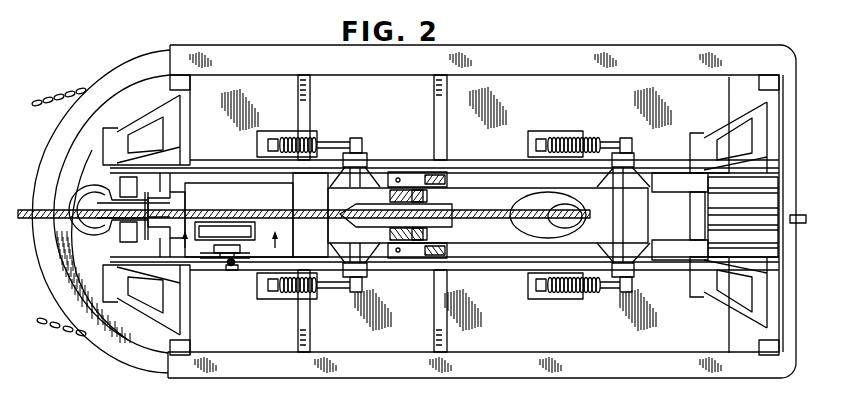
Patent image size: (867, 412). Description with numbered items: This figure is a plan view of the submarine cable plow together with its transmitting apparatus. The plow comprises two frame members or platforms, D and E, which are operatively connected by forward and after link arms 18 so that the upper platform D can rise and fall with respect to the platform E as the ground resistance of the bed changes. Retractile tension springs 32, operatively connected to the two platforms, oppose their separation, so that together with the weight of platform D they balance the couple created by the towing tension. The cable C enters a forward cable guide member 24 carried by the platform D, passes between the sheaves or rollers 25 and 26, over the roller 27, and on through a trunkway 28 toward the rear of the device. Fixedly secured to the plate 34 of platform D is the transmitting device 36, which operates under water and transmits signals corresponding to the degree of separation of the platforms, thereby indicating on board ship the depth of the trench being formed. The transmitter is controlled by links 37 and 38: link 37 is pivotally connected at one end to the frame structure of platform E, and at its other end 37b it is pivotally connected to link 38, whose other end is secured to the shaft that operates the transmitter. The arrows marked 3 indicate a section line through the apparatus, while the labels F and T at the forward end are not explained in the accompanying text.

The front nose guard F is at (106, 63).
The tow chain T is at (57, 96).
The cable C is at (27, 209).
The forward and after link arms 18 is at (138, 128).
The sheave or roller 25 is at (96, 191).
The forward cable guide member 24 is at (83, 232).
The sheave or roller 26 is at (173, 208).
The plate 34 is at (256, 215).
The transmitting device 36 is at (236, 232).
The section line 3 is at (230, 232).
The roller 27 is at (358, 205).
The trunkway 28 is at (530, 226).
The frame member or platform D is at (488, 215).
The frame member or platform E is at (483, 324).
The retractile tension springs 32 is at (312, 141).
The link 37 is at (204, 265).
The link 38 is at (229, 267).
The other end of link 37 37b is at (234, 270).